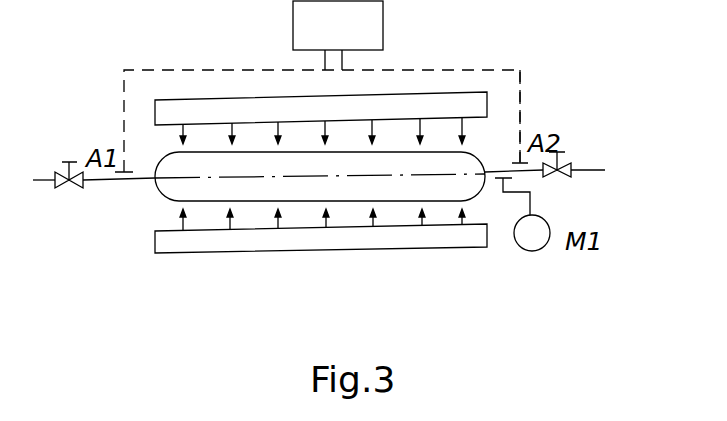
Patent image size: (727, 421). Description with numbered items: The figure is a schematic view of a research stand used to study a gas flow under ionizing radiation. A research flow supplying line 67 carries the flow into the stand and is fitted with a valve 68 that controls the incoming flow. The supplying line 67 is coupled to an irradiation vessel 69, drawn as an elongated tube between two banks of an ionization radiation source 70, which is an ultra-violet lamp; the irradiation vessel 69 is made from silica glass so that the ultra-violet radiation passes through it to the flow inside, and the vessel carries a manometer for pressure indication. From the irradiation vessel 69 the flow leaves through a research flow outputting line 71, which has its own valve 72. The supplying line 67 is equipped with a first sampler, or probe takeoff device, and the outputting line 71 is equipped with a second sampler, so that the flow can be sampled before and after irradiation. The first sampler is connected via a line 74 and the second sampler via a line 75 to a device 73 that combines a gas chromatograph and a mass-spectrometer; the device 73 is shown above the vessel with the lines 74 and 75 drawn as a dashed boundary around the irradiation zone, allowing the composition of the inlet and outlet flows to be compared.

The research flow supplying line 67 is at (36, 182).
The valve 68 is at (80, 188).
The irradiation vessel 69 is at (320, 178).
The ionization radiation source 70 is at (486, 95).
The research flow outputting line 71 is at (583, 172).
The valve 72 is at (563, 165).
The device combining a gas chromatograph and mass-spectrometer 73 is at (373, 22).
The line 74 is at (211, 73).
The line 75 is at (440, 66).